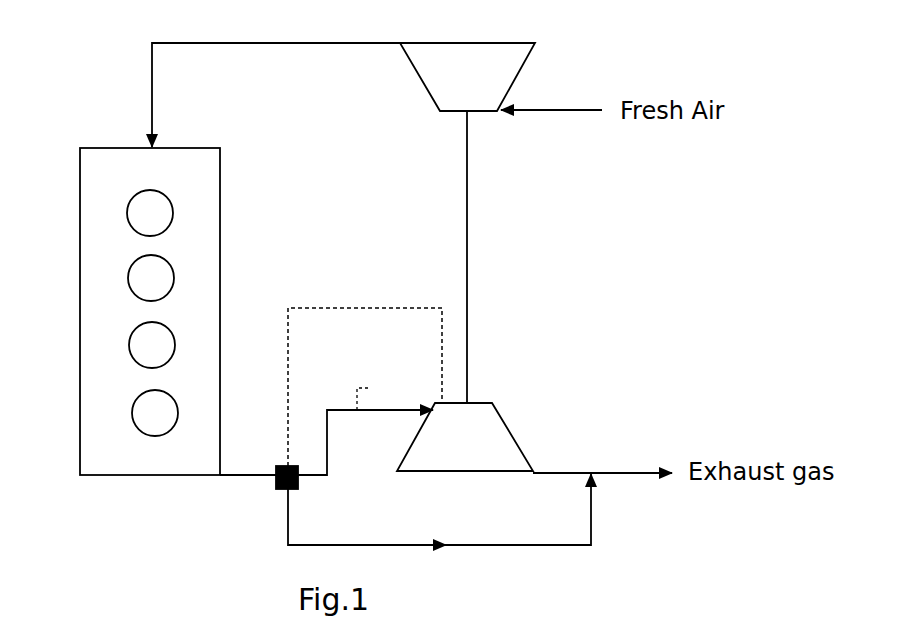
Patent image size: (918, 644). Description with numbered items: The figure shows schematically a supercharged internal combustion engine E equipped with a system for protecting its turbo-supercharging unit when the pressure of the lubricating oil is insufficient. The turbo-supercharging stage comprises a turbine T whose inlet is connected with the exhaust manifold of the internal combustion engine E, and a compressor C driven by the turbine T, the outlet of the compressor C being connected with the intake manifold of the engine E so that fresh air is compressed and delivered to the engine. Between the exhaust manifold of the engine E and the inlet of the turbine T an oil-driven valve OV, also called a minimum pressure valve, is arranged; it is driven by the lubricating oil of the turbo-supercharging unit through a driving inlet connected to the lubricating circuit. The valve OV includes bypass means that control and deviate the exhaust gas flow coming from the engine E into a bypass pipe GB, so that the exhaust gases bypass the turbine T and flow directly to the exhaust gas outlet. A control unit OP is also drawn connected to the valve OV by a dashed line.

The internal combustion engine E is at (73, 136).
The compressor C is at (423, 118).
The turbine T is at (527, 413).
The operating/control unit OP is at (342, 307).
The oil-driven valve OV is at (268, 491).
The bypass pipe GB is at (611, 547).